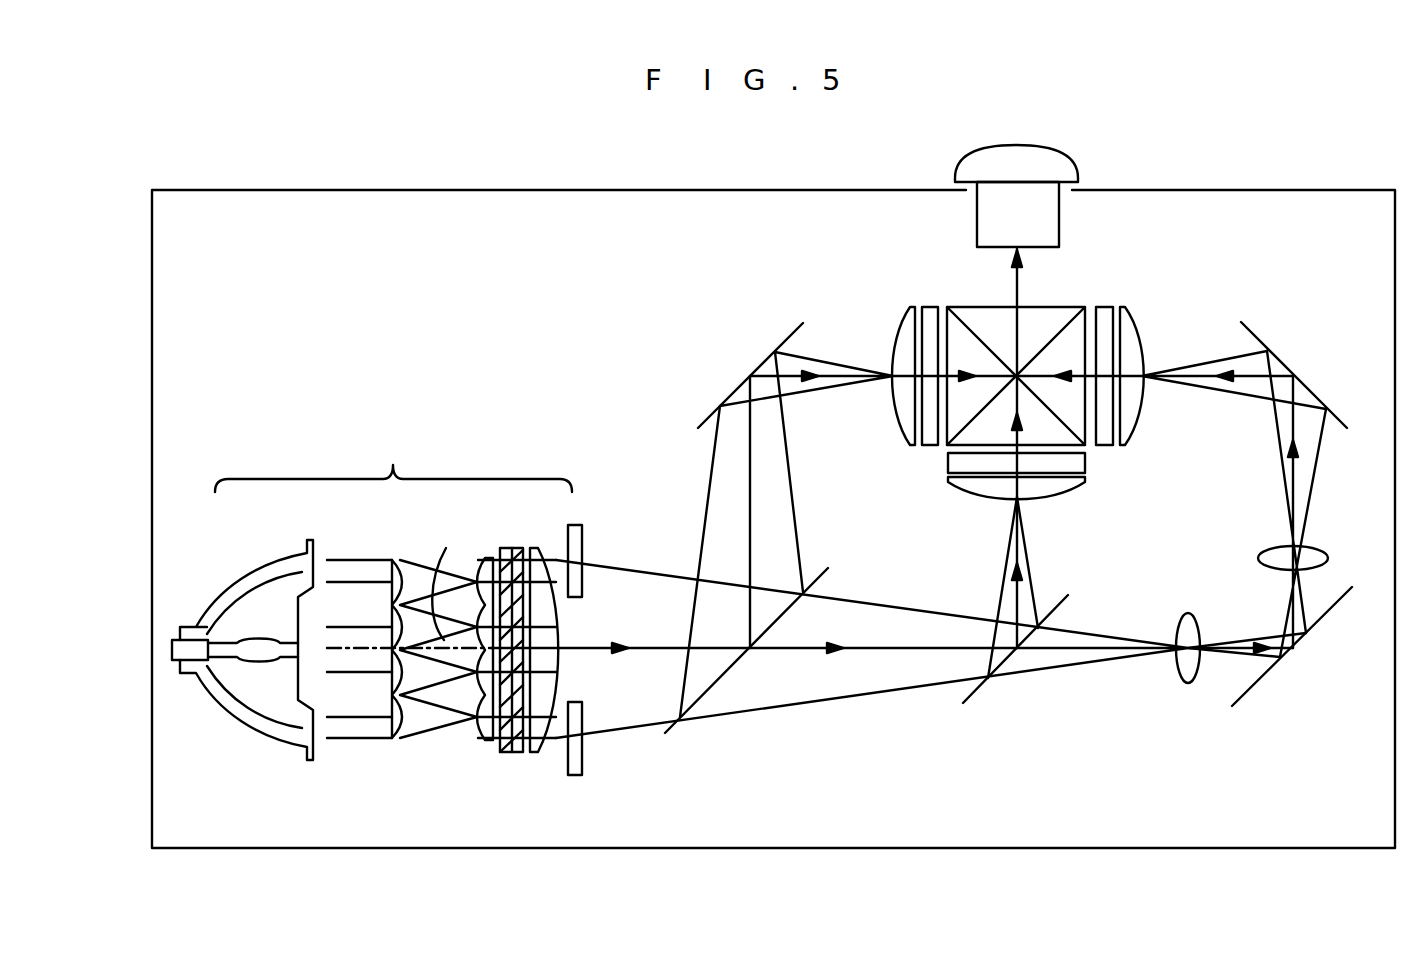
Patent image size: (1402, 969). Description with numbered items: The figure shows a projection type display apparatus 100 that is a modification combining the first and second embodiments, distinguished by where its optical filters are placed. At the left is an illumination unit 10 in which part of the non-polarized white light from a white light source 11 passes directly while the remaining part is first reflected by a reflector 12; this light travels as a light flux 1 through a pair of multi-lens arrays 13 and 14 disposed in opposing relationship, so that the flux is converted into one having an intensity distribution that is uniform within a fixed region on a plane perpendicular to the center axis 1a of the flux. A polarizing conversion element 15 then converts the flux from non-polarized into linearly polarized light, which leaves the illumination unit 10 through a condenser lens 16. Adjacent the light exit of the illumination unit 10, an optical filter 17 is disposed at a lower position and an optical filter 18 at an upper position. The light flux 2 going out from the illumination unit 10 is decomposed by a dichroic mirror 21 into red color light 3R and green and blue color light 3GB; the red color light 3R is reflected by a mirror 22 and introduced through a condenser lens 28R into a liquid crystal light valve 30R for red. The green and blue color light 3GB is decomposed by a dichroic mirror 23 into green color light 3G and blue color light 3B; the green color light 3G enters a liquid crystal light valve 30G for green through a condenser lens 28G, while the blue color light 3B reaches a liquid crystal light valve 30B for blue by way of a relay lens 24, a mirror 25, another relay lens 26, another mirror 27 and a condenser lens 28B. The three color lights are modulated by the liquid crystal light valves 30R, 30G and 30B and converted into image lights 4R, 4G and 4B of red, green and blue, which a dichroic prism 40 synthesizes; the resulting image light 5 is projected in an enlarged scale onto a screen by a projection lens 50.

The projection type display apparatus 100 is at (374, 190).
The illumination unit 10 is at (393, 460).
The light flux 1 is at (269, 645).
The center axis 1a is at (446, 579).
The white light source 11 is at (258, 662).
The reflector 12 is at (207, 683).
The multi-lens array 13 is at (392, 740).
The multi-lens array 14 is at (477, 732).
The polarizing conversion element 15 is at (505, 753).
The condenser lens 16 is at (537, 753).
The optical filter 17 is at (582, 760).
The optical filter 18 is at (582, 540).
The light flux 2 is at (681, 577).
The dichroic mirror 21 is at (703, 702).
The mirror 22 is at (702, 418).
The dichroic mirror 23 is at (975, 691).
The relay lens 24 is at (1188, 684).
The mirror 25 is at (1264, 682).
The relay lens 26 is at (1308, 548).
The mirror 27 is at (1250, 336).
The condenser lens 28R is at (895, 400).
The condenser lens 28G is at (1052, 497).
The condenser lens 28B is at (1133, 322).
The liquid crystal light valve for red 30R is at (920, 312).
The liquid crystal light valve for green 30G is at (1092, 475).
The liquid crystal light valve for blue 30B is at (1104, 305).
The red color light 3R is at (710, 466).
The green color light 3G is at (1000, 590).
The blue color light 3B is at (1102, 662).
The green and blue color light 3GB is at (852, 698).
The image light of red 4R is at (957, 370).
The image light of green 4G is at (1017, 440).
The image light of blue 4B is at (1042, 368).
The dichroic prism 40 is at (955, 448).
The image light 5 is at (1018, 280).
The projection lens 50 is at (1032, 150).